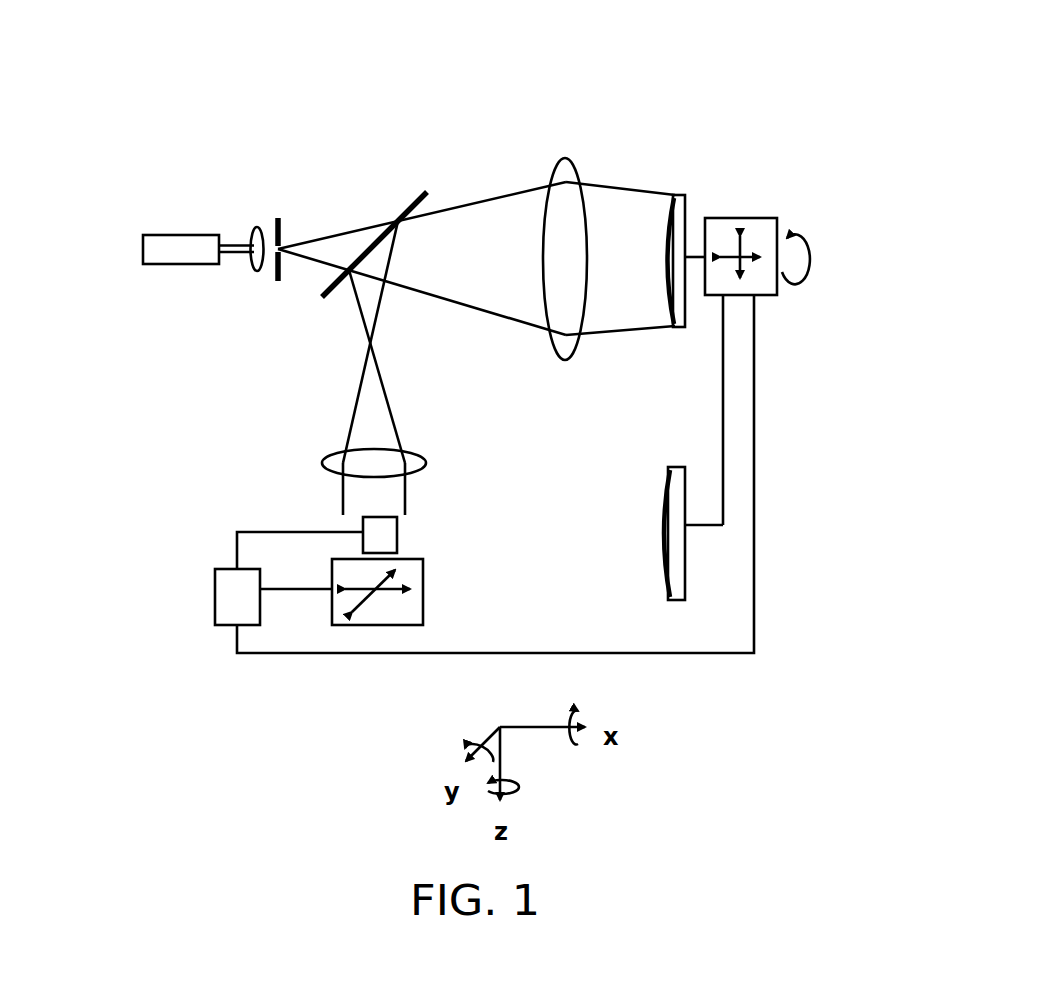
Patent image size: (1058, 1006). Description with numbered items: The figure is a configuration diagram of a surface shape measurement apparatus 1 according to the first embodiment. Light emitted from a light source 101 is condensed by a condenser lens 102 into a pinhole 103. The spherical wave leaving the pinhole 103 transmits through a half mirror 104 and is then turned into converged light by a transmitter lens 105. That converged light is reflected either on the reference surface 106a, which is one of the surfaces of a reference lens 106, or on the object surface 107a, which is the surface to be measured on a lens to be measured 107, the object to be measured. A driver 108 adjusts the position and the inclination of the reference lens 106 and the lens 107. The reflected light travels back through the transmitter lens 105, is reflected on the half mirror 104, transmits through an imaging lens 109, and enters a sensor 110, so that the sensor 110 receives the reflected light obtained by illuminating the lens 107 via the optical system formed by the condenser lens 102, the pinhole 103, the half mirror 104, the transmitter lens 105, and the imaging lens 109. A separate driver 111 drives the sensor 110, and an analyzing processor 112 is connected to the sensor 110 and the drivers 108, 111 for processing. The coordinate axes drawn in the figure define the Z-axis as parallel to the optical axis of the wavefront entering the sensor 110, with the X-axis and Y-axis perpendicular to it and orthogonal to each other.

The surface shape measurement apparatus 1 is at (798, 93).
The light source 101 is at (143, 235).
The condenser lens 102 is at (258, 230).
The pinhole 103 is at (282, 218).
The half mirror 104 is at (427, 195).
The transmitter lens 105 is at (566, 158).
The reference lens 106 is at (679, 260).
The reference surface 106a is at (667, 324).
The lens to be measured 107 is at (643, 559).
The object surface 107a is at (686, 540).
The driver 108 is at (762, 218).
The imaging lens 109 is at (424, 455).
The sensor 110 is at (398, 532).
The driver 111 is at (424, 614).
The analyzing processor 112 is at (215, 582).